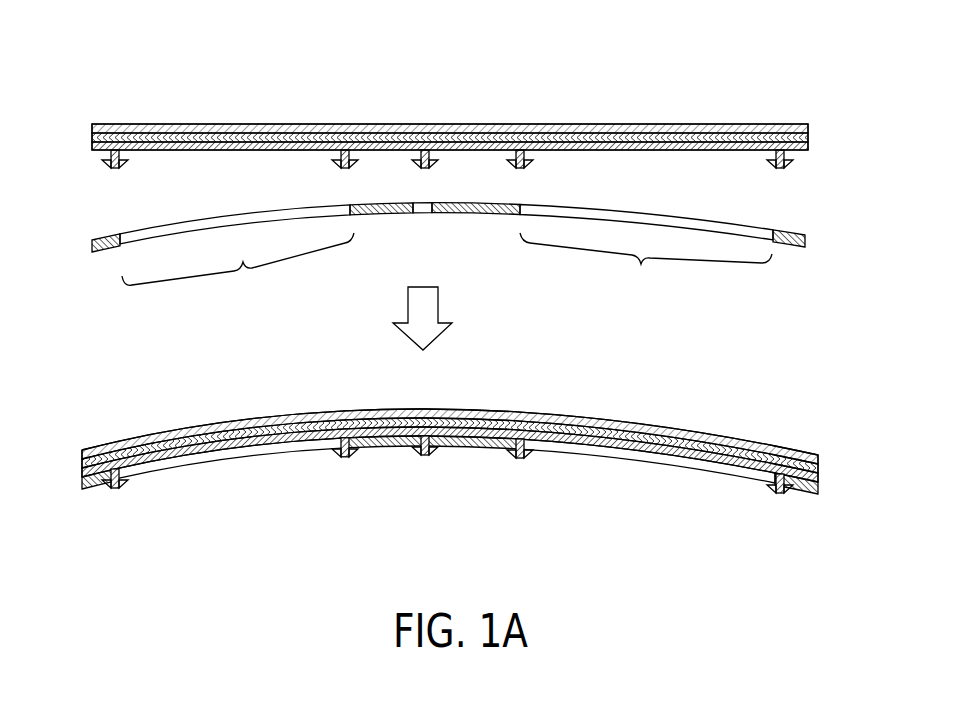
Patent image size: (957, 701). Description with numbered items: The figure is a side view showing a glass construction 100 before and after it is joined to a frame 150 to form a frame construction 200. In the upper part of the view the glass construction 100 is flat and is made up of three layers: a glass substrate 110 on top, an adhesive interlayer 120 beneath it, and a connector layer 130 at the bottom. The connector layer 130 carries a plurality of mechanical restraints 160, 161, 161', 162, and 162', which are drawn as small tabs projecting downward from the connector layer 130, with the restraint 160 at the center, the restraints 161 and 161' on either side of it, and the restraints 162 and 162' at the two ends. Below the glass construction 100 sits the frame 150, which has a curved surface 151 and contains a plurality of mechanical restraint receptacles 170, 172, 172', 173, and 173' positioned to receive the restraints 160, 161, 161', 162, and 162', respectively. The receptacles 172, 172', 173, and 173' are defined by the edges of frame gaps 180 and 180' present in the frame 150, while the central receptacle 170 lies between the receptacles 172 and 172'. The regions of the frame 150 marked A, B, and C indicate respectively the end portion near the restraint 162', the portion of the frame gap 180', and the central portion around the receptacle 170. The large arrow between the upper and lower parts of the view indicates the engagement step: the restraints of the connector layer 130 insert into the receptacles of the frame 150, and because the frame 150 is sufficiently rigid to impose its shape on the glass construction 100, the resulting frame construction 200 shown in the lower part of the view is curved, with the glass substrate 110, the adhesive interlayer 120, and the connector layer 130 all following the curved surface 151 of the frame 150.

The glass construction 100 is at (536, 80).
The glass substrate 110 is at (783, 128).
The adhesive interlayer 120 is at (810, 137).
The connector layer 130 is at (810, 146).
The frame 150 is at (802, 245).
The curved surface 151 is at (788, 236).
The mechanical restraint 160 is at (434, 164).
The mechanical restraint 161 is at (552, 321).
The mechanical restraint 161' is at (310, 323).
The mechanical restraint 162 is at (780, 332).
The mechanical restraint 162' is at (81, 357).
The mechanical restraint receptacle 170 is at (425, 214).
The mechanical restraint receptacle 172 is at (432, 326).
The mechanical restraint receptacle 172' is at (381, 245).
The mechanical restraint receptacle 173 is at (766, 329).
The mechanical restraint receptacle 173' is at (99, 361).
The frame gap 180 is at (646, 268).
The frame gap 180' is at (238, 274).
The frame construction 200 is at (549, 388).
The region A is at (137, 179).
The region B is at (237, 251).
The region C is at (417, 231).